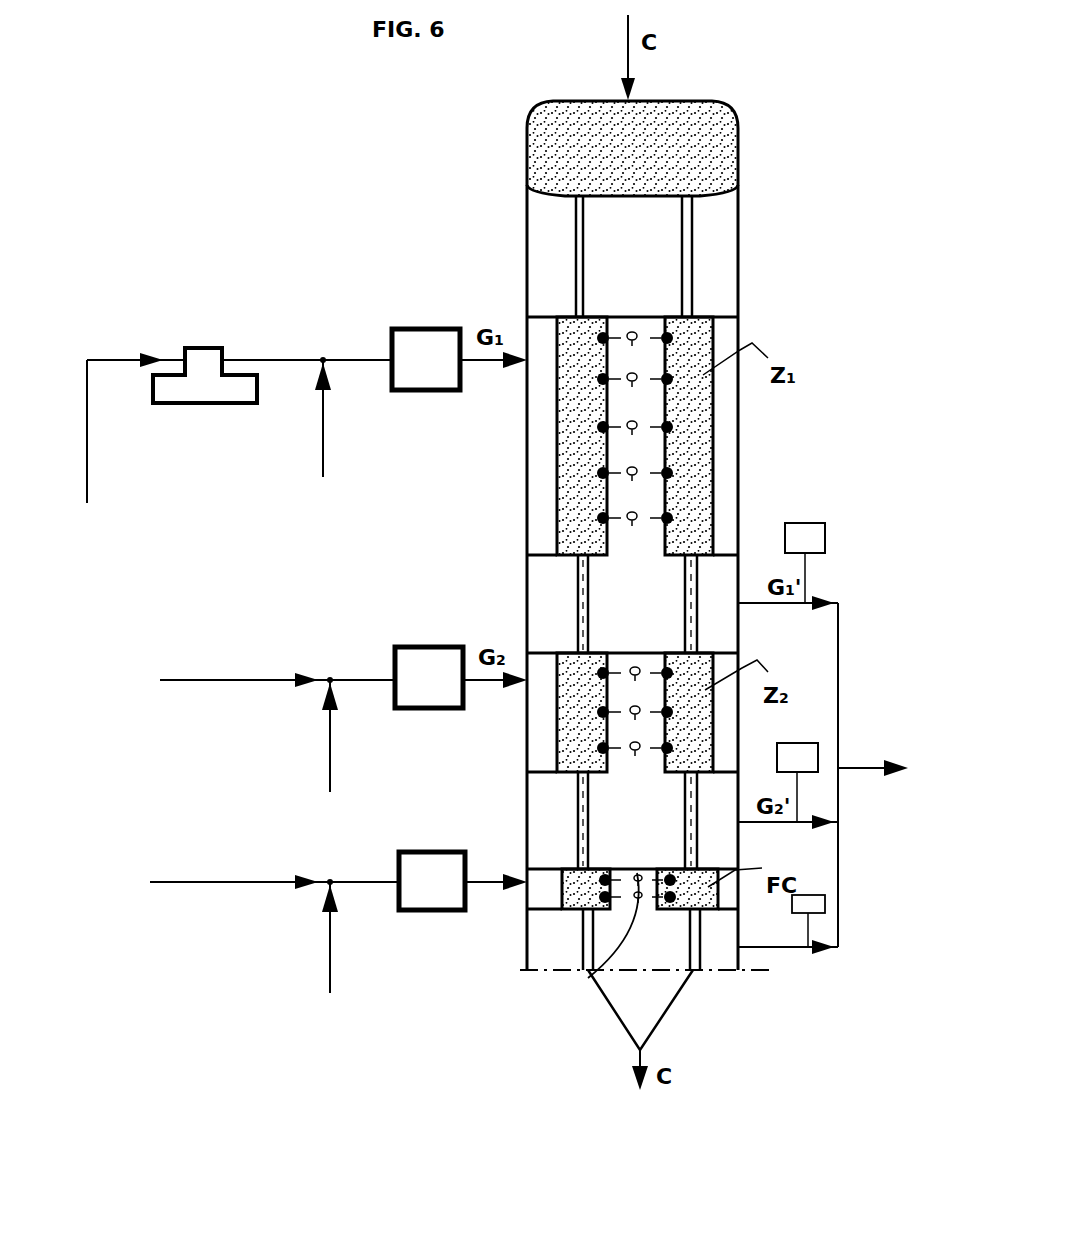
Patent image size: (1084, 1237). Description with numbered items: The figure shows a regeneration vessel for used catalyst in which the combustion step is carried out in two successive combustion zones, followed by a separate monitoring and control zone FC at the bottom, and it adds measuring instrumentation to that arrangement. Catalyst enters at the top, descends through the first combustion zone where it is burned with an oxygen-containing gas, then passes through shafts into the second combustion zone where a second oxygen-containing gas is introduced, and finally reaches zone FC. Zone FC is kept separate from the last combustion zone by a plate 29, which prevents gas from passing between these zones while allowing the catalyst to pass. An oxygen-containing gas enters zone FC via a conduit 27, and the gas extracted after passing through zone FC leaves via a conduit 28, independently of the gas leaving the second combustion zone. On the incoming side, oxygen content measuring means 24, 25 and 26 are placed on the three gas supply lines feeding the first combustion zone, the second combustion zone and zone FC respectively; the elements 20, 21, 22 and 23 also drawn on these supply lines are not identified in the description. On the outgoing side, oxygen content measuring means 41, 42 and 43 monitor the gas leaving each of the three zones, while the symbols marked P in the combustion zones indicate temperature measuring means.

The hydrocarbon feed inlet 20 is at (212, 405).
The first gas supply line 21 is at (325, 420).
The second gas supply line 22 is at (332, 745).
The third gas supply line 23 is at (332, 945).
The oxygen content measuring means 24 is at (426, 359).
The oxygen content measuring means 25 is at (429, 677).
The oxygen content measuring means 26 is at (432, 881).
The conduit 27 is at (475, 888).
The conduit 28 is at (775, 949).
The plate 29 is at (590, 983).
The oxygen content measuring means 41 is at (805, 563).
The oxygen content measuring means 42 is at (797, 782).
The oxygen content measuring means 43 is at (808, 921).